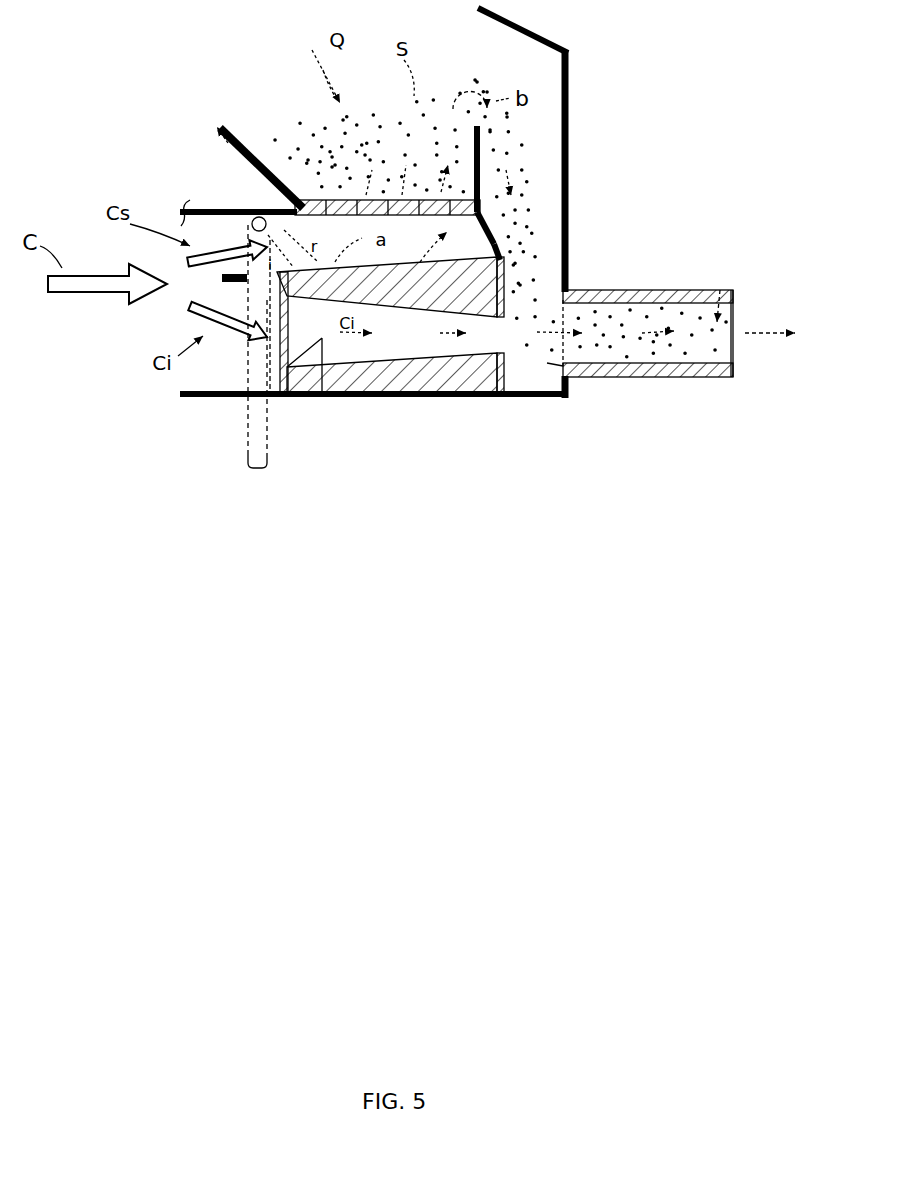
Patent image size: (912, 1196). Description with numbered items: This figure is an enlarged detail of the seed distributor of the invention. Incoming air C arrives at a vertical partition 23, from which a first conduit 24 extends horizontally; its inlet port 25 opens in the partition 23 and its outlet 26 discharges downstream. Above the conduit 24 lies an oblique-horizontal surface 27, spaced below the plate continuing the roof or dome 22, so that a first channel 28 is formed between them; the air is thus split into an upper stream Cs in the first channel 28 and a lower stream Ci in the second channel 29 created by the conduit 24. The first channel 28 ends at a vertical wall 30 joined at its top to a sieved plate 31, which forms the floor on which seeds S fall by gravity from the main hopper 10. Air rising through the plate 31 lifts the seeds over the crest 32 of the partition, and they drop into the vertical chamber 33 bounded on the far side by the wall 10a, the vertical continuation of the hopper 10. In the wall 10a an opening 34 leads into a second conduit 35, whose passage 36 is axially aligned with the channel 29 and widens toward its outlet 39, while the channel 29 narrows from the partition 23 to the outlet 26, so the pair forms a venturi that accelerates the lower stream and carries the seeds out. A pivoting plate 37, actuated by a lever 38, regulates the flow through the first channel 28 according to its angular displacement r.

The main hopper 10 is at (470, 15).
The wall 10a is at (568, 96).
The roof or dome 22 is at (220, 208).
The vertical partition 23 is at (270, 383).
The first conduit 24 is at (413, 386).
The inlet port 25 is at (322, 392).
The outlet 26 is at (503, 380).
The oblique-horizontal surface 27 is at (213, 272).
The first channel 28 is at (458, 239).
The second channel 29 is at (383, 397).
The vertical wall 30 is at (490, 252).
The sieved plate 31 is at (303, 200).
The crest 32 is at (481, 128).
The vertical chamber 33 is at (538, 155).
The opening 34 is at (545, 363).
The second conduit 35 is at (685, 367).
The second conduit passage 36 is at (720, 290).
The pivoting plate 37 is at (258, 216).
The lever 38 is at (253, 450).
The outlet 39 is at (735, 358).